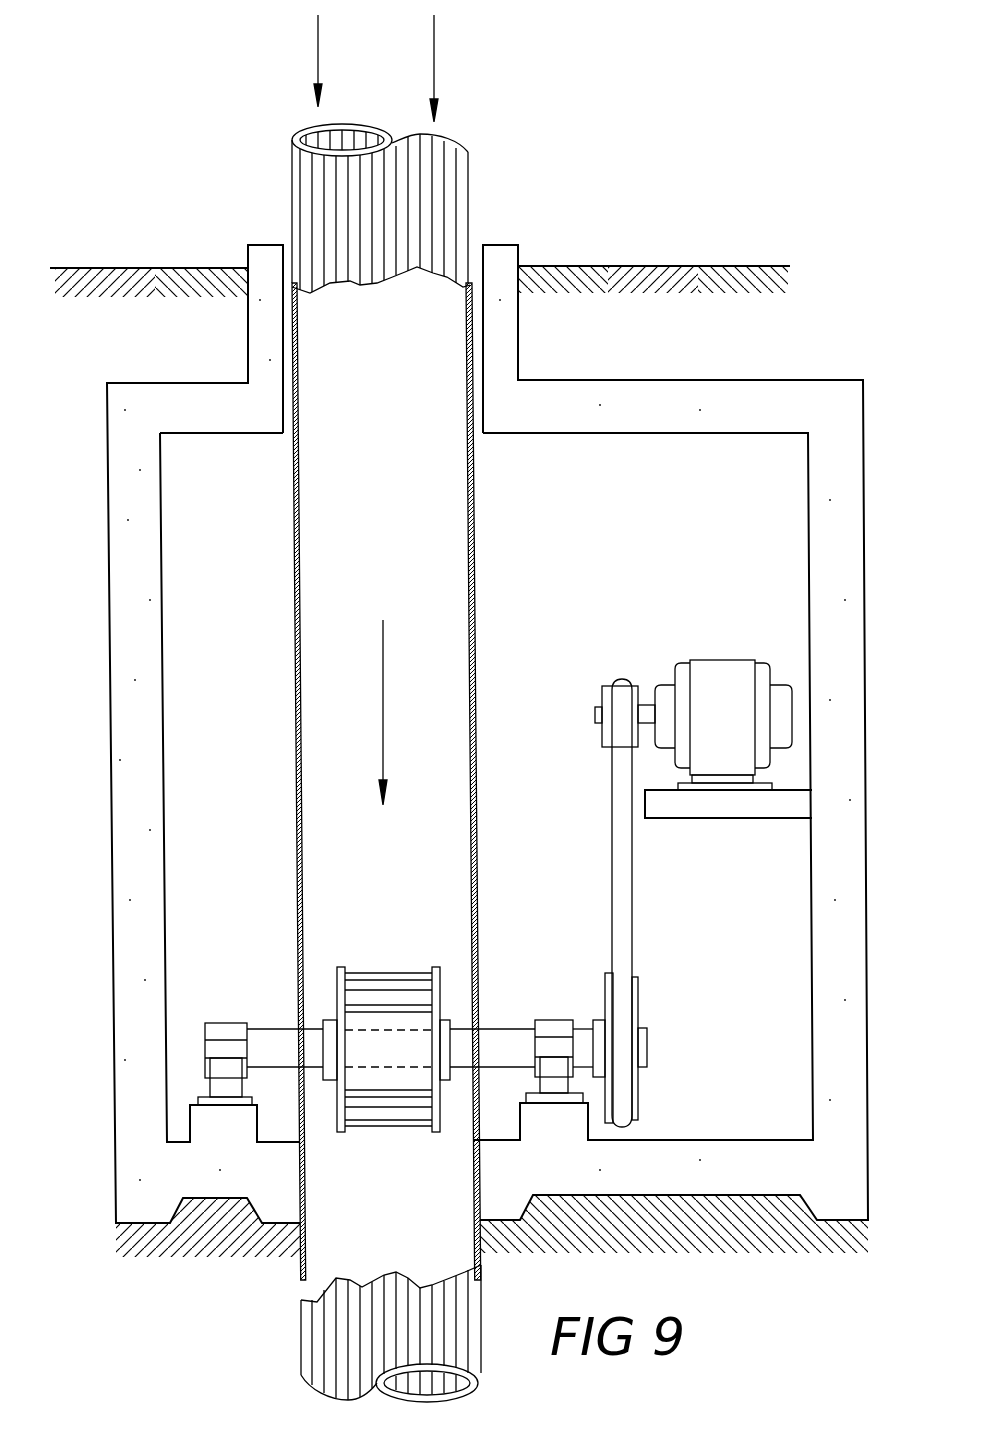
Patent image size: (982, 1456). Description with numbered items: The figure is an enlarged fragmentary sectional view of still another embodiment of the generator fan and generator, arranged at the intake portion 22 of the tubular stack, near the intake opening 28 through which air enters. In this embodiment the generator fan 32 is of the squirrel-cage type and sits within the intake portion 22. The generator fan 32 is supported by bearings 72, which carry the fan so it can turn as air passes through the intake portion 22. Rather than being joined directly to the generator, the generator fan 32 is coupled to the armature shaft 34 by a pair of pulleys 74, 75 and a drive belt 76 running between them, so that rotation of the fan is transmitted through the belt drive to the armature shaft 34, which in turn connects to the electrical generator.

The intake portion 22 is at (472, 211).
The intake opening 28 is at (343, 122).
The generator fan 32 is at (390, 967).
The armature shaft 34 is at (645, 706).
The bearings 72 is at (205, 1023).
The pulley 74 is at (640, 1016).
The pulley 75 is at (608, 684).
The drive belt 76 is at (612, 848).